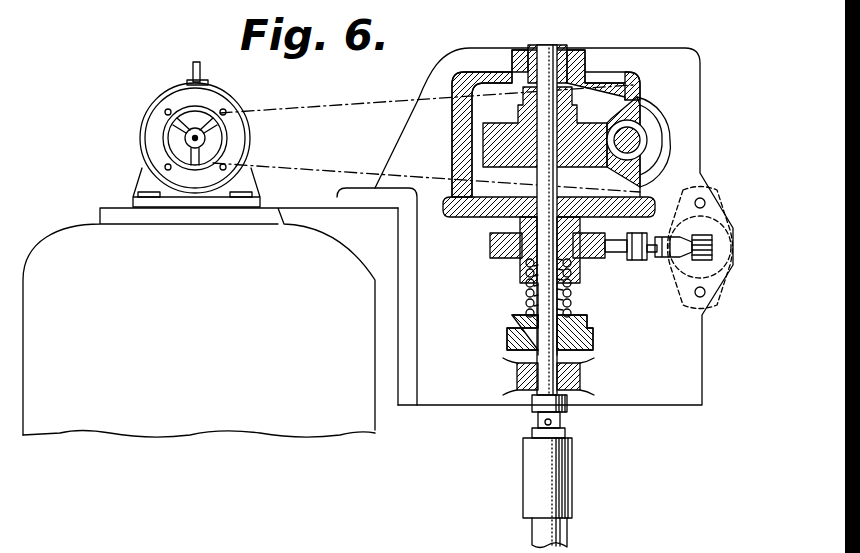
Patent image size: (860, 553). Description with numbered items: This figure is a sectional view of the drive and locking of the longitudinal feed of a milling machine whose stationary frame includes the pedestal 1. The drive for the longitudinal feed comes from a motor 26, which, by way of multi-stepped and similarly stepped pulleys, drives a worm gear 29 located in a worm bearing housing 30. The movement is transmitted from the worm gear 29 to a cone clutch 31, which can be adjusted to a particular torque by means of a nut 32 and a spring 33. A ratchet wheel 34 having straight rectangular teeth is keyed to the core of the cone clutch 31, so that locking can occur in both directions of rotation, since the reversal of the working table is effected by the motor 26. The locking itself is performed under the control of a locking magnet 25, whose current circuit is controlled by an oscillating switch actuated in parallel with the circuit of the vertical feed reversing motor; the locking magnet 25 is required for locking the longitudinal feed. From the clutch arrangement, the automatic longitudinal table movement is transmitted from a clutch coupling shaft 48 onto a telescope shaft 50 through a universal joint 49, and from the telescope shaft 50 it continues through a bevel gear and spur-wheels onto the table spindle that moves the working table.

The pedestal 1 is at (62, 242).
The motor 26 is at (210, 102).
The worm bearing housing 30 is at (465, 72).
The clutch coupling shaft 48 is at (543, 55).
The worm gear 29 is at (620, 127).
The locking magnet 25 is at (712, 205).
The cone clutch 31 is at (517, 220).
The ratchet wheel 34 is at (530, 260).
The spring 33 is at (567, 290).
The nut 32 is at (593, 337).
The universal joint 49 is at (553, 422).
The telescope shaft 50 is at (565, 493).